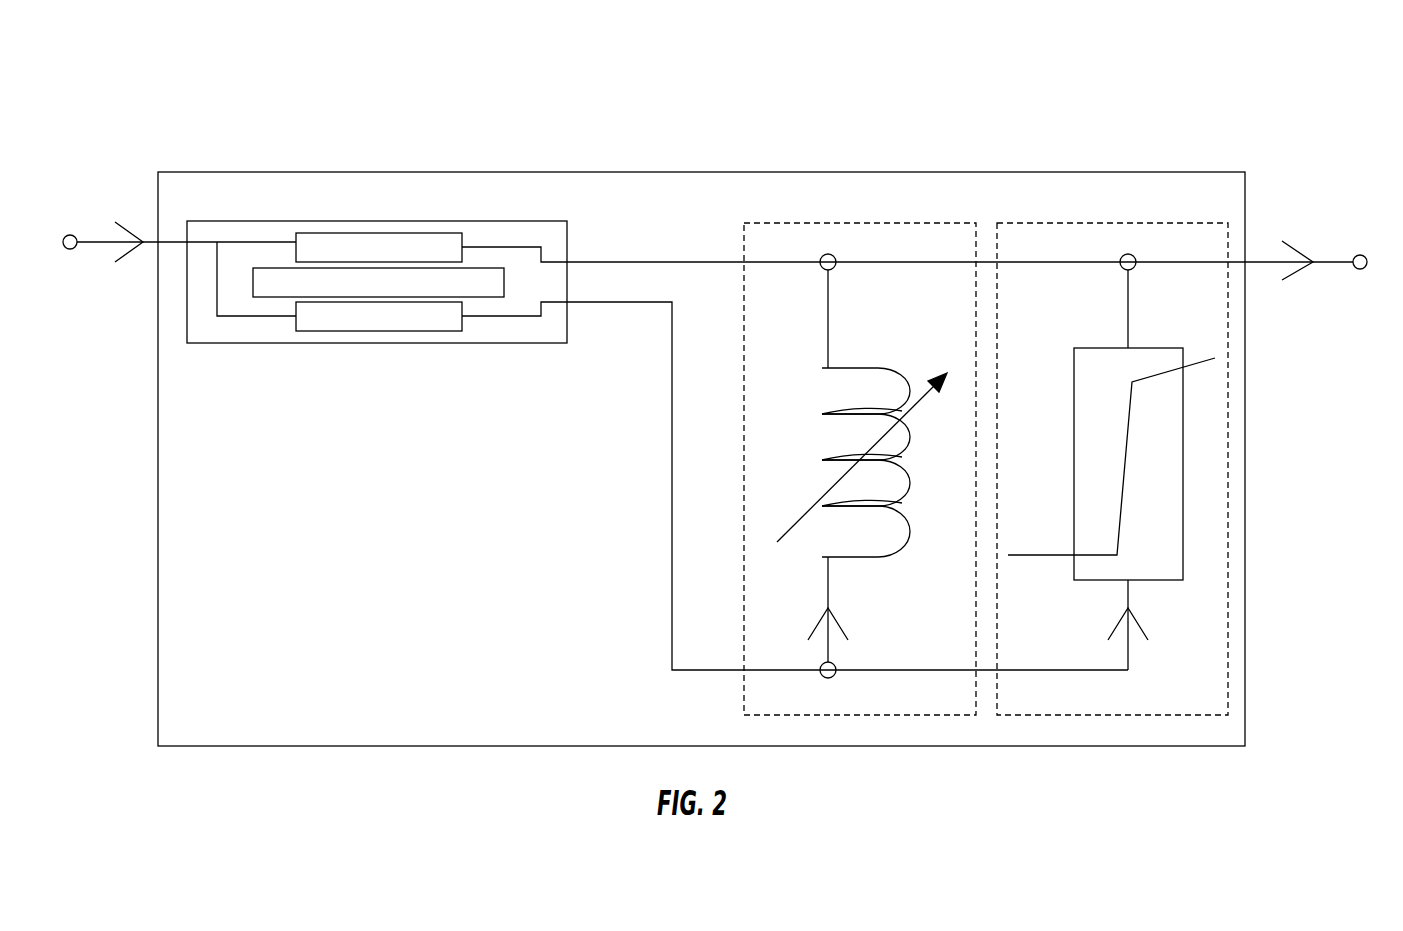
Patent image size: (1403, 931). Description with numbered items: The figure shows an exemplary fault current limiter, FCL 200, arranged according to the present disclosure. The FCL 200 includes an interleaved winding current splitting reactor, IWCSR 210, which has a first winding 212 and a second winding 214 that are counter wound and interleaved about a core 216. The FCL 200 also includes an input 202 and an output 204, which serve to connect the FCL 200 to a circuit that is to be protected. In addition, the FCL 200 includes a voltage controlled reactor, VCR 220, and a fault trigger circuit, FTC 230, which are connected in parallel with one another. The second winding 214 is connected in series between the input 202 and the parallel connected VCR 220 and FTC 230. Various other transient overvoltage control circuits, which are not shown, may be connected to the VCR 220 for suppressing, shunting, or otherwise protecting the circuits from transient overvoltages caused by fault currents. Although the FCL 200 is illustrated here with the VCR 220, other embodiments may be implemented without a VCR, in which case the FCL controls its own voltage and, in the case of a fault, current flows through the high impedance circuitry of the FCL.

The fault current limiter 200 is at (280, 68).
The input 202 is at (72, 235).
The output 204 is at (1362, 254).
The interleaved winding current splitting reactor 210 is at (326, 260).
The first winding 212 is at (353, 233).
The second winding 214 is at (400, 332).
The core 216 is at (253, 278).
The voltage controlled reactor 220 is at (826, 222).
The fault trigger circuit 230 is at (1097, 222).